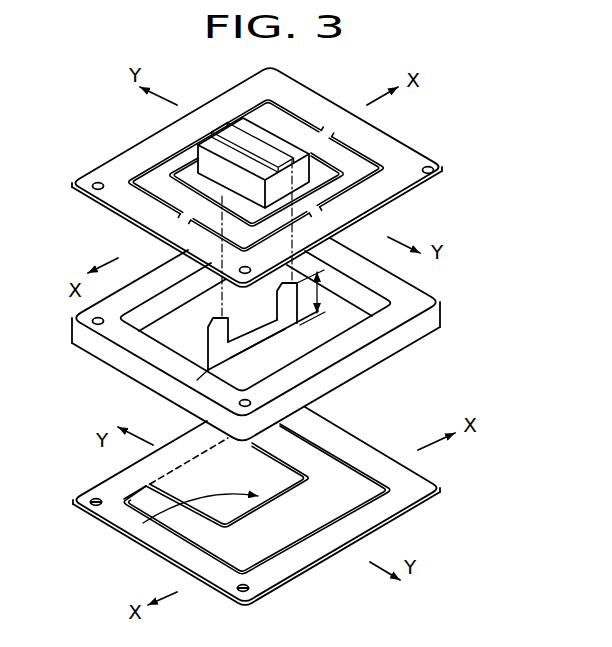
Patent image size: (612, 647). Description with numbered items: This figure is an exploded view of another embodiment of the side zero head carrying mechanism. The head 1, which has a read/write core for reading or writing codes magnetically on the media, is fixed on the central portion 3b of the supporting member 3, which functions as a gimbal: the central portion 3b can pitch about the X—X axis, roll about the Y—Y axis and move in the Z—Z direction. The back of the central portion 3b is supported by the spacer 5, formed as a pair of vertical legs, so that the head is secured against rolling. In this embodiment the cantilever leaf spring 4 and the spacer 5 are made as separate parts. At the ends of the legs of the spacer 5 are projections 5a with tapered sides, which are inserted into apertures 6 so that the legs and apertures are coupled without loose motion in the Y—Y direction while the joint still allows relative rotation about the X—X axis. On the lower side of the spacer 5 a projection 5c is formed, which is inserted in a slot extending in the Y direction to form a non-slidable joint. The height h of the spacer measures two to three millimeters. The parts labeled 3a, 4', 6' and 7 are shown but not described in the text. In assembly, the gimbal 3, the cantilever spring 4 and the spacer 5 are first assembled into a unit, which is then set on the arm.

The head 1 is at (215, 146).
The supporting member 3 is at (403, 157).
The upper plate edge 3a is at (444, 168).
The central portion 3b is at (322, 173).
The cantilever spring 4 is at (222, 499).
The lower plate 4' is at (270, 506).
The spacer 5 is at (208, 342).
The projections 5a is at (298, 282).
The projection 5c is at (257, 349).
The apertures 6 is at (227, 184).
The slot 6' is at (156, 533).
The frame 7 is at (427, 330).
The height of the spacer h is at (320, 299).